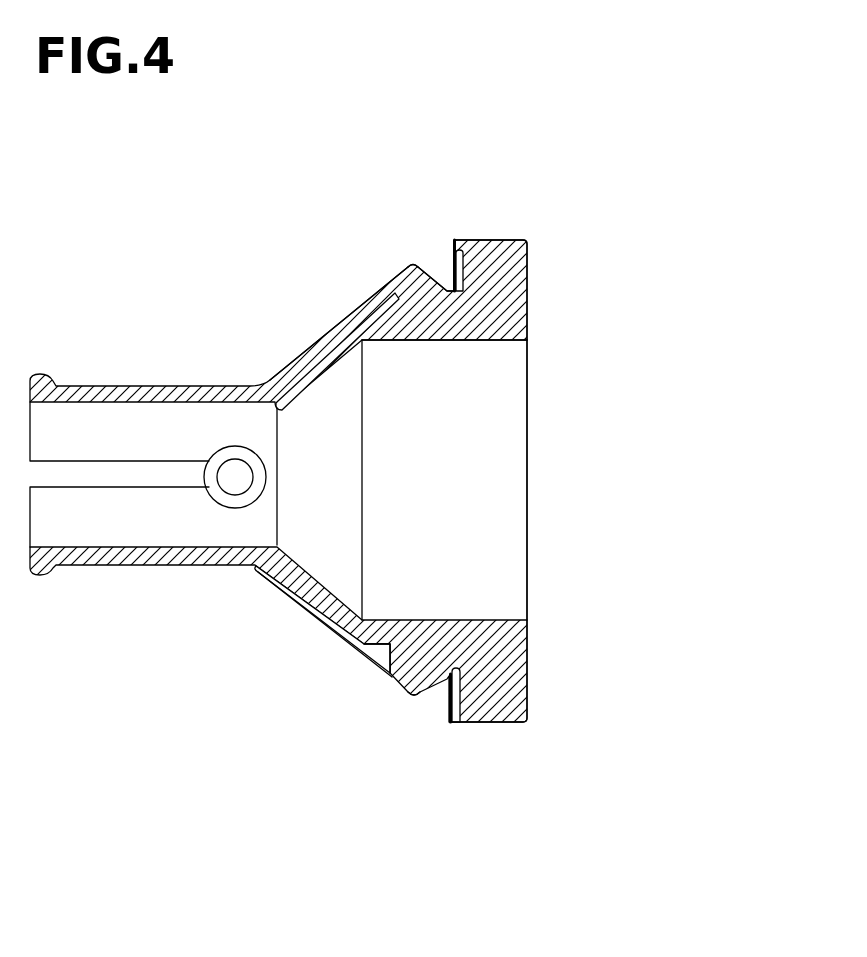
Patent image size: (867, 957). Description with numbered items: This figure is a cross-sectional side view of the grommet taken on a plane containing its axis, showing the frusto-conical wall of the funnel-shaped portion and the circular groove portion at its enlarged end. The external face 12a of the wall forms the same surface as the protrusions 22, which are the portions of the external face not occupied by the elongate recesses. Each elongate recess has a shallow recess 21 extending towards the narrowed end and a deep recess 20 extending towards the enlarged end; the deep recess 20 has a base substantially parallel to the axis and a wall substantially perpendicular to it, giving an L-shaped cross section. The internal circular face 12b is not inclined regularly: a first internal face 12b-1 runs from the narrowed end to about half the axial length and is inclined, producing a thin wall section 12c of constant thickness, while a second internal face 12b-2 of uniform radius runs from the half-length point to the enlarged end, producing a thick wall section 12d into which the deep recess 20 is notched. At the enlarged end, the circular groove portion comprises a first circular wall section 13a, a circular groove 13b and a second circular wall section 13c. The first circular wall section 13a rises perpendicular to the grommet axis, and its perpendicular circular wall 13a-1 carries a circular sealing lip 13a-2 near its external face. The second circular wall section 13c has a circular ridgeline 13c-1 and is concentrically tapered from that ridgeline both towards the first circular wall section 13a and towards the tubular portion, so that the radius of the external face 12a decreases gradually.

The external face 12a is at (300, 352).
The internal circular face 12b is at (362, 617).
The first internal face 12b-1 is at (300, 388).
The second internal face 12b-2 is at (428, 342).
The thin wall section 12c is at (372, 318).
The thick wall section 12d is at (352, 307).
The first circular wall section 13a is at (502, 247).
The perpendicular circular wall 13a-1 is at (450, 697).
The circular sealing lip 13a-2 is at (453, 722).
The circular groove 13b is at (448, 290).
The second circular wall section 13c is at (447, 289).
The circular ridgeline 13c-1 is at (413, 265).
The deep recess 20 is at (372, 658).
The shallow recess 21 is at (288, 588).
The protrusions 22 is at (327, 625).